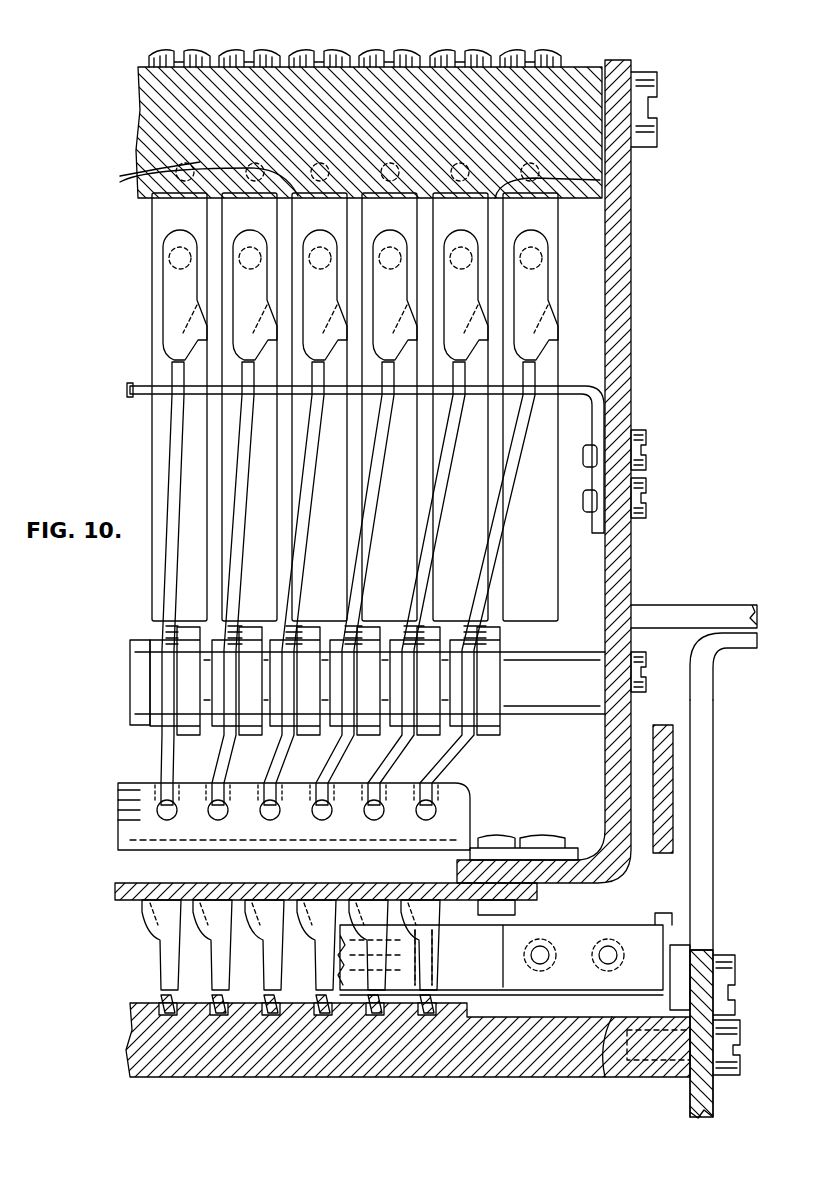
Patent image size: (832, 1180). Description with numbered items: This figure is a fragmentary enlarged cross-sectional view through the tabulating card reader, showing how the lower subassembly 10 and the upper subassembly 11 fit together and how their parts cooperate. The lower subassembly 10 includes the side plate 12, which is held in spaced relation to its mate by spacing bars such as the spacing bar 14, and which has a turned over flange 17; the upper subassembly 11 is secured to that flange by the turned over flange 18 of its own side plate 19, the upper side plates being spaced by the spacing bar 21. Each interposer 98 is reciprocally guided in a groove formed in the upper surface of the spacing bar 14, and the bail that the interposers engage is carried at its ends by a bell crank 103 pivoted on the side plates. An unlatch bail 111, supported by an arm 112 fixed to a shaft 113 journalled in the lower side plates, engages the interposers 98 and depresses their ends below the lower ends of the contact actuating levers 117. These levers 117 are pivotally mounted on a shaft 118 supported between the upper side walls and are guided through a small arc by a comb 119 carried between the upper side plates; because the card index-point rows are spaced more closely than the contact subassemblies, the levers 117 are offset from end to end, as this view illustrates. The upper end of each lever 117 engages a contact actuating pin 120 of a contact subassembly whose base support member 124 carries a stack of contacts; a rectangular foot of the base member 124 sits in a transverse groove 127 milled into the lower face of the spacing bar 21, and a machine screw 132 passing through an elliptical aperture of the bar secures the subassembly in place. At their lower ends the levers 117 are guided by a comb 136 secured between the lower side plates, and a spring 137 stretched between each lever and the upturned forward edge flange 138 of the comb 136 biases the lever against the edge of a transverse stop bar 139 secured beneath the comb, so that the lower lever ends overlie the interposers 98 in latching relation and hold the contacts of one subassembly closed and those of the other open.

The lower subassembly 10 is at (728, 766).
The upper subassembly 11 is at (643, 271).
The side plate 12 is at (713, 802).
The spacing bar 14 is at (266, 1068).
The turned over flange 17 is at (733, 648).
The turned over flange 18 is at (712, 605).
The side plate 19 is at (622, 375).
The spacing bar 21 is at (140, 130).
The interposer 98 is at (218, 1015).
The bell crank 103 is at (664, 853).
The unlatch bail 111 is at (480, 942).
The arm 112 is at (622, 1020).
The shaft 113 is at (725, 978).
The contact actuating lever 117 is at (172, 286).
The shaft 118 is at (536, 708).
The comb 119 is at (130, 390).
The contact actuating pin 120 is at (160, 245).
The base support member 124 is at (158, 219).
The transverse groove 127 is at (638, 181).
The machine screw 132 is at (240, 56).
The comb 136 is at (583, 855).
The spring 137 is at (420, 788).
The upturned forward edge flange 138 is at (470, 800).
The transverse stop bar 139 is at (537, 898).